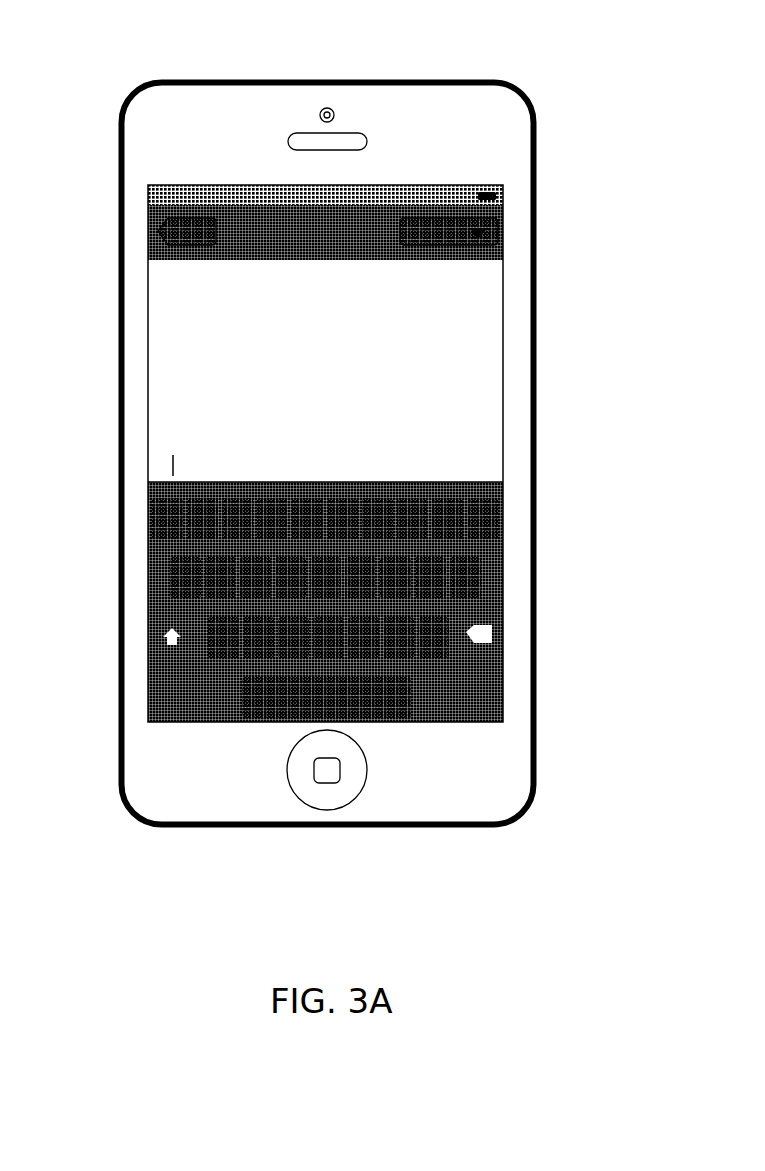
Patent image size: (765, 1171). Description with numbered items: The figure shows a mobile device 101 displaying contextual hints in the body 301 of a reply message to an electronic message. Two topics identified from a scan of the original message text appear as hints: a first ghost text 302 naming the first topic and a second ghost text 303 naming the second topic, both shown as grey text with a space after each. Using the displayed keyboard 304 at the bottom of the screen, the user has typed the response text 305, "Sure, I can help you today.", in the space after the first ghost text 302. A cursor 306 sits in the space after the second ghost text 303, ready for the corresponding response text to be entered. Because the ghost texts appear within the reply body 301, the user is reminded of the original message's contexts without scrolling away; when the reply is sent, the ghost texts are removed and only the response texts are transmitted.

The mobile device 101 is at (484, 46).
The body of the reply message 301 is at (507, 322).
The first ghost text 302 is at (155, 368).
The second ghost text 303 is at (153, 433).
The displayed keyboard 304 is at (508, 580).
The response text 305 is at (446, 400).
The cursor 306 is at (157, 462).